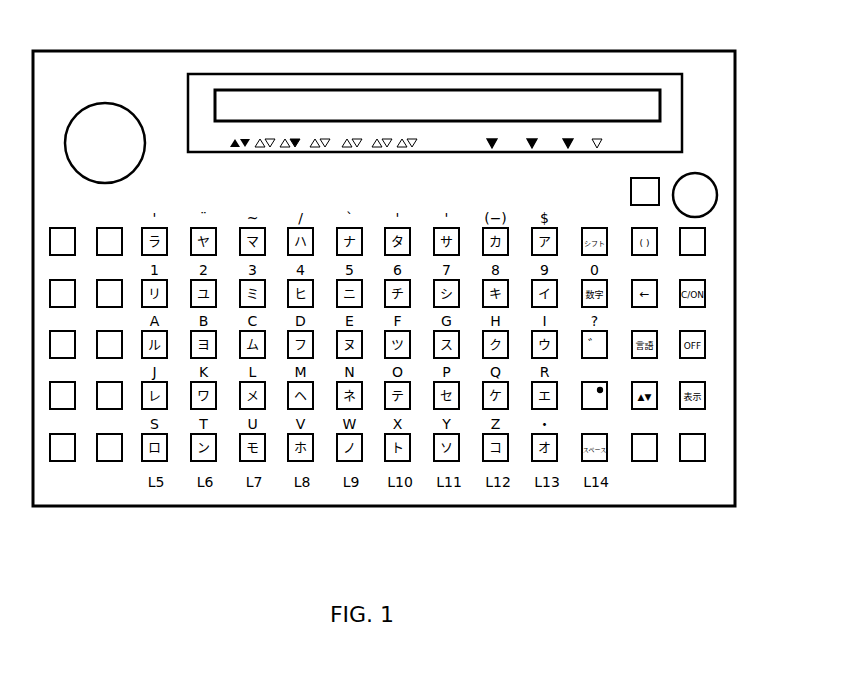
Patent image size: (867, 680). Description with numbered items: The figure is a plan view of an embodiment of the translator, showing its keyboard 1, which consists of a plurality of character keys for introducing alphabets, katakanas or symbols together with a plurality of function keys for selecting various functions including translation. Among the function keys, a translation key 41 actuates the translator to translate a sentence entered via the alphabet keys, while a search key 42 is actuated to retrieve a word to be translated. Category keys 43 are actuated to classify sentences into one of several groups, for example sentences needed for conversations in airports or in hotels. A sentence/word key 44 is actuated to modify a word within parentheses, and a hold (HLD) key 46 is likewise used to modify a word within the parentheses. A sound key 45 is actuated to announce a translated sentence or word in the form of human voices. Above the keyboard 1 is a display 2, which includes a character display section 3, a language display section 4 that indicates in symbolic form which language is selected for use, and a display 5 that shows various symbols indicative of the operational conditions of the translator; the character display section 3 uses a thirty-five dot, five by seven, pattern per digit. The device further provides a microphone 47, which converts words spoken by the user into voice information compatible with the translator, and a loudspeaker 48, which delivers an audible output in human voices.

The keyboard 1 is at (374, 510).
The display 2 is at (488, 72).
The character display section 3 is at (432, 100).
The language display section 4 is at (307, 143).
The display for symbols indicative of operational conditions 5 is at (587, 143).
The translation key 41 is at (647, 461).
The search key 42 is at (706, 448).
The category keys 43 is at (87, 462).
The sentence/word key 44 is at (706, 238).
The sound key 45 is at (660, 178).
The hold (HLD) key 46 is at (608, 403).
The microphone 47 is at (717, 195).
The loudspeaker 48 is at (112, 102).